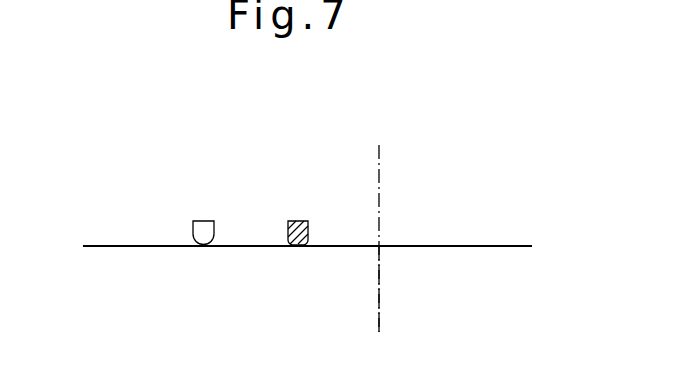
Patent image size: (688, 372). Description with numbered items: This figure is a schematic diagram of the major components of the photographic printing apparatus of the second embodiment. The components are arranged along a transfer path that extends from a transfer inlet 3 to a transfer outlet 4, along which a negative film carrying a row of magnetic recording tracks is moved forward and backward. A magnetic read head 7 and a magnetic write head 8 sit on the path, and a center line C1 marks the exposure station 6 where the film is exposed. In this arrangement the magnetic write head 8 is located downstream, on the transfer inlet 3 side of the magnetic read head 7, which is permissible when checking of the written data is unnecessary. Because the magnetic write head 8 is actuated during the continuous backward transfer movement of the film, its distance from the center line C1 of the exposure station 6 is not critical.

The transfer inlet 3 is at (98, 228).
The transfer outlet 4 is at (532, 231).
The exposure station 6 is at (388, 256).
The magnetic read head 7 is at (192, 228).
The magnetic write head 8 is at (287, 228).
The center line C1 is at (379, 213).